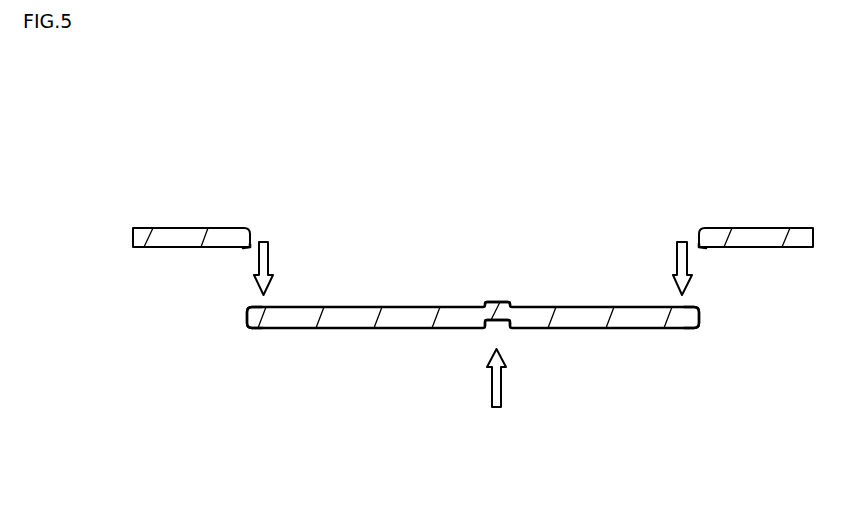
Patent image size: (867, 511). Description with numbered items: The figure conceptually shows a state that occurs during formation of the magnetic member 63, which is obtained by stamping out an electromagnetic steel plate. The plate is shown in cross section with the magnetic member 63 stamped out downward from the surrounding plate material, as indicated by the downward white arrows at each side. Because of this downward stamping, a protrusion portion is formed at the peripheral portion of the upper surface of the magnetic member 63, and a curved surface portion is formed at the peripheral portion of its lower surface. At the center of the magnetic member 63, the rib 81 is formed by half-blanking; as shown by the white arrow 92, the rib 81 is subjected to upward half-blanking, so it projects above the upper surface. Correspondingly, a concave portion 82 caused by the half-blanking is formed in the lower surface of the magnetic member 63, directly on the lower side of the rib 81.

The magnetic member 63 is at (410, 317).
The rib 81 is at (497, 301).
The concave portion 82 is at (495, 329).
The white arrow 92 is at (503, 381).